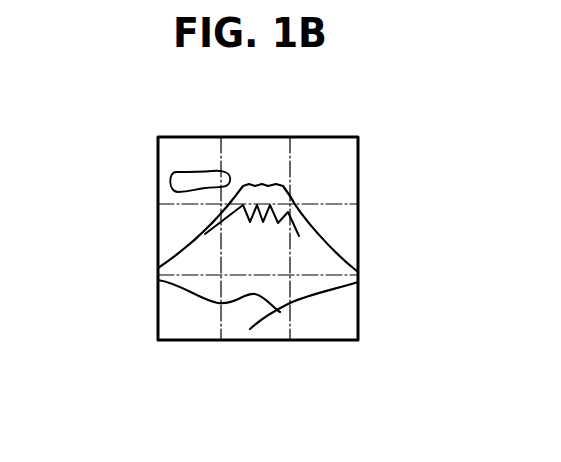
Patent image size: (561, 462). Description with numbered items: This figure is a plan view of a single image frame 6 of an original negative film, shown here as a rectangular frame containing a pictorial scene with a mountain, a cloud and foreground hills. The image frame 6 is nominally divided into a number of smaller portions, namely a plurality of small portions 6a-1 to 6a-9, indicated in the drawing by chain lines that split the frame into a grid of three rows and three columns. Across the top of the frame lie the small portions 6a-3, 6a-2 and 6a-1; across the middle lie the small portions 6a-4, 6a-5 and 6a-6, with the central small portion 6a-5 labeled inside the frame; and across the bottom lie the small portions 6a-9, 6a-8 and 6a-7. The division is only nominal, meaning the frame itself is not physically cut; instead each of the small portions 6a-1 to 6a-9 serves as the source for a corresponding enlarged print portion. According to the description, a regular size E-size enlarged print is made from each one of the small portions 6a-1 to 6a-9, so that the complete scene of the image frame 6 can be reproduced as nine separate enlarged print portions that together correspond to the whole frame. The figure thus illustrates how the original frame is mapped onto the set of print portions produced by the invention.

The image frame 6 is at (375, 167).
The small portion 6a-1 is at (323, 147).
The small portion 6a-2 is at (254, 147).
The small portion 6a-3 is at (183, 142).
The small portion 6a-4 is at (158, 240).
The small portion 6a-5 is at (277, 266).
The small portion 6a-6 is at (348, 244).
The small portion 6a-7 is at (315, 343).
The small portion 6a-8 is at (245, 343).
The small portion 6a-9 is at (191, 343).